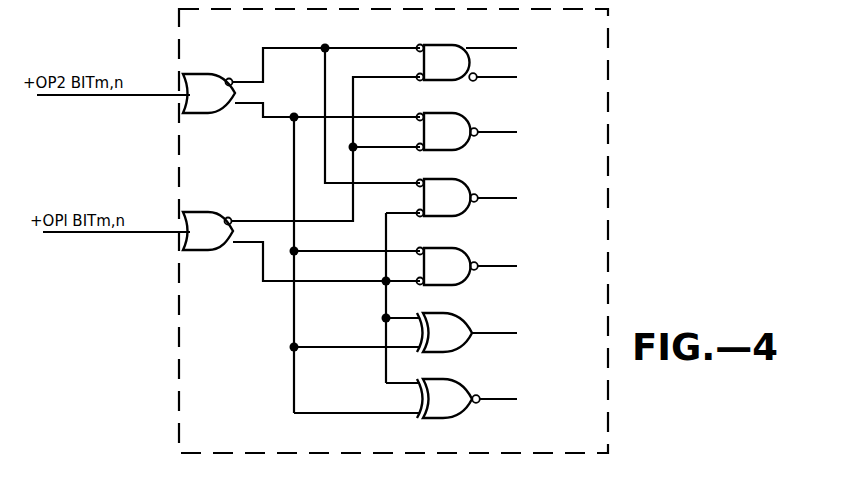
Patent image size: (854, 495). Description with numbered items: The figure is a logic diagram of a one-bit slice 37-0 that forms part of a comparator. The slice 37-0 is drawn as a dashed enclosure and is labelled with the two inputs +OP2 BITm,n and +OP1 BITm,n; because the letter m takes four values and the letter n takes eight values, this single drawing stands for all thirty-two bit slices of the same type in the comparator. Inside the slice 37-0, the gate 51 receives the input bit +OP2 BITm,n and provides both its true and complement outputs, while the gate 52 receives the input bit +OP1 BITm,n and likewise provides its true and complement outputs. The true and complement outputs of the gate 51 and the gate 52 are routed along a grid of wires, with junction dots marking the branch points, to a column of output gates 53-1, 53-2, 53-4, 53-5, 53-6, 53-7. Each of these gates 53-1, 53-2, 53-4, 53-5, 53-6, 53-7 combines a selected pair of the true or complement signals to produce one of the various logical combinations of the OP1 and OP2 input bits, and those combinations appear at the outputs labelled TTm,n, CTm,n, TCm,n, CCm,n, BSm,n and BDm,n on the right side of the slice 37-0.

The one-bit slice 37-0 is at (430, 231).
The gate 51 is at (207, 80).
The gate 52 is at (201, 222).
The gate 53-1 is at (440, 55).
The gate 53-2 is at (458, 122).
The gate 53-4 is at (448, 193).
The gate 53-5 is at (452, 258).
The gate 53-6 is at (452, 327).
The gate 53-7 is at (448, 393).